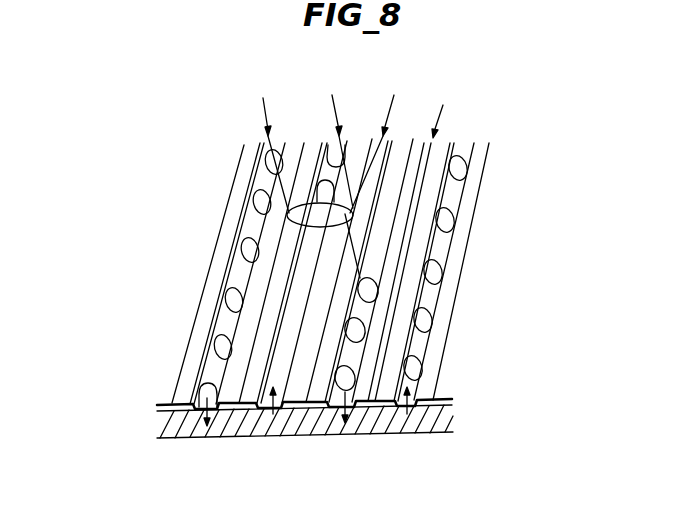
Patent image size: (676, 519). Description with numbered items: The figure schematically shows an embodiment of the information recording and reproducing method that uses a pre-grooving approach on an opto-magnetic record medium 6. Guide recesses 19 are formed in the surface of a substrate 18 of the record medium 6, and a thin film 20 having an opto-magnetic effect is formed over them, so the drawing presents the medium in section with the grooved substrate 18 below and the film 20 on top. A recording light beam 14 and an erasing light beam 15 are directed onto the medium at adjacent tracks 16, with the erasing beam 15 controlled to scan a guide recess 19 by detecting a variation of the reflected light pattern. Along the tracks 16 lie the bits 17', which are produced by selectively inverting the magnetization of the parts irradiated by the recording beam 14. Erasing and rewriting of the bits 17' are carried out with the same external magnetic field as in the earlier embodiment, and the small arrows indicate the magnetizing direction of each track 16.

The record medium 6 is at (187, 333).
The recording light beam 14 is at (362, 291).
The erasing light beam 15 is at (288, 214).
The tracks 16 is at (434, 137).
The bits 17' is at (414, 273).
The substrate 18 is at (195, 432).
The guide recesses 19 is at (217, 413).
The thin film 20 is at (157, 408).